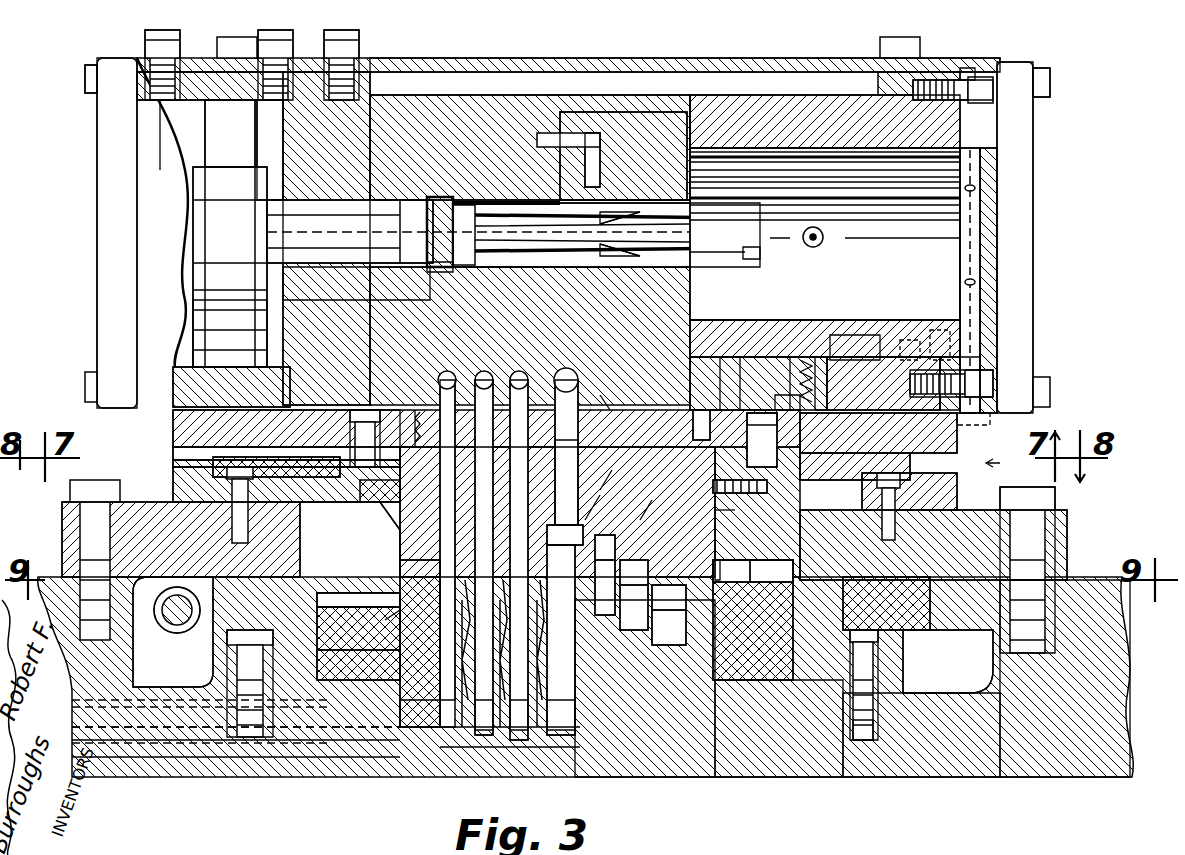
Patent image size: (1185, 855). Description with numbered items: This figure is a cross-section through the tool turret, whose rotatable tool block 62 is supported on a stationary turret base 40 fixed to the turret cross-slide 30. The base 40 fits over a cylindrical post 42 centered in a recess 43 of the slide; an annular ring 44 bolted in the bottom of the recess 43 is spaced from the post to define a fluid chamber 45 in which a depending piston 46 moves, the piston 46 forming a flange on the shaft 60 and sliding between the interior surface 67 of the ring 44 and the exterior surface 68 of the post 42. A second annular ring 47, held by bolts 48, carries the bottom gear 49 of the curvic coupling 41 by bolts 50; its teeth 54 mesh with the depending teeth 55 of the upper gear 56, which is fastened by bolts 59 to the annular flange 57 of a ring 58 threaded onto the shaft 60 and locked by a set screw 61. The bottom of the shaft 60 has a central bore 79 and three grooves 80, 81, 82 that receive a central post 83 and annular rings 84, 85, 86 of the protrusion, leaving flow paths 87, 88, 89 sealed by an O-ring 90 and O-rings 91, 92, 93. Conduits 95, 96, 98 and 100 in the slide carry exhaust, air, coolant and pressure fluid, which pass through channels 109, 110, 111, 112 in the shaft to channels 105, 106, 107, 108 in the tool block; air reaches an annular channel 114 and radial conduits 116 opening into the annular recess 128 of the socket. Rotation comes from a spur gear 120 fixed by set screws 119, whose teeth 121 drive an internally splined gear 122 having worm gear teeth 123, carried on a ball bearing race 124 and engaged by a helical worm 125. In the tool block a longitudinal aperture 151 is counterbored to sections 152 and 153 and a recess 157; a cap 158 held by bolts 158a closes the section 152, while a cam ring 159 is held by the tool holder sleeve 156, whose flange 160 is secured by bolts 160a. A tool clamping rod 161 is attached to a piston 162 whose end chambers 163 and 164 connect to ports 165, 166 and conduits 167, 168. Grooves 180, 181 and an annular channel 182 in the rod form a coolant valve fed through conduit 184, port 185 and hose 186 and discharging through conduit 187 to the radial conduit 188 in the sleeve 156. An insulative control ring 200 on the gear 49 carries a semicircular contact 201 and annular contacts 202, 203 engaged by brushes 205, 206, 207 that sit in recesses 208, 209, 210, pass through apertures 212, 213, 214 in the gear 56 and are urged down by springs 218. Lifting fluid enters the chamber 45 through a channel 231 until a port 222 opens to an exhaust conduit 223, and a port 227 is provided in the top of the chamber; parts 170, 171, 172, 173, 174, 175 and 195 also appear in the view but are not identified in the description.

The turret cross-slide 30 is at (1068, 760).
The turret base 40 is at (1105, 536).
The curvic coupling 41 is at (1000, 463).
The cylindrical post 42 is at (610, 660).
The recess 43 is at (960, 690).
The annular ring 44 is at (900, 672).
The fluid chamber 45 is at (760, 690).
The piston 46 is at (705, 690).
The second annular ring 47 is at (68, 540).
The bolts 48 is at (1058, 500).
The bottom gear 49 is at (178, 487).
The bolts 50 is at (957, 492).
The teeth 54 is at (175, 464).
The gear teeth 55 is at (178, 452).
The upper gear 56 is at (175, 425).
The annular flange 57 is at (752, 413).
The ring 58 is at (700, 395).
The bolts 59 is at (760, 390).
The shaft 60 is at (605, 410).
The set screw 61 is at (698, 412).
The tool block 62 is at (940, 385).
The interior surface 67 is at (786, 605).
The exterior surface 68 is at (731, 588).
The central vertical bore 79 is at (570, 530).
The annular groove 80 is at (606, 535).
The annular groove 81 is at (660, 575).
The annular groove 82 is at (685, 590).
The central post 83 is at (600, 490).
The annular ring 84 is at (660, 500).
The annular ring 85 is at (648, 540).
The annular ring 86 is at (410, 612).
The flow path 87 is at (602, 587).
The flow path 88 is at (634, 609).
The flow path 89 is at (669, 629).
The O-ring 90 is at (565, 547).
The O-ring 91 is at (561, 640).
The O-ring 92 is at (405, 655).
The O-ring 93 is at (400, 635).
The conduit 95 is at (420, 745).
The conduit 96 is at (485, 745).
The conduit 98 is at (525, 745).
The conduit 100 is at (565, 745).
The channel 105 is at (447, 372).
The channel 106 is at (484, 372).
The channel 107 is at (519, 370).
The channel 108 is at (568, 370).
The channel 109 is at (415, 412).
The channel 110 is at (440, 535).
The channel 111 is at (580, 440).
The channel 112 is at (585, 466).
The annular channel 114 is at (968, 68).
The radial conduits 116 is at (970, 280).
The set screws 119 is at (713, 488).
The spur gear 120 is at (730, 518).
The peripheral teeth 121 is at (345, 507).
The internally splined gear 122 is at (180, 635).
The worm gear teeth 123 is at (230, 670).
The ball bearing race 124 is at (930, 590).
The helical worm 125 is at (165, 630).
The annular recess 128 is at (985, 232).
The longitudinal aperture 151 is at (490, 203).
The counterbored section 152 is at (200, 110).
The counterbored section 153 is at (790, 118).
The tool holder sleeve 156 is at (845, 320).
The counterbored recess 157 is at (943, 78).
The cap 158 is at (110, 220).
The bolts 158a is at (88, 92).
The cam ring 159 is at (645, 118).
The flange 160 is at (985, 110).
The bolts 160a is at (1042, 68).
The tool clamping rod 161 is at (285, 220).
The piston 162 is at (210, 190).
The end chamber 163 is at (190, 320).
The end chamber 164 is at (270, 350).
The port 165 is at (170, 100).
The port 166 is at (278, 100).
The conduit 167 is at (163, 30).
The conduit 168 is at (280, 32).
The rod 170 is at (705, 265).
The rod end 171 is at (755, 262).
The cone 172 is at (640, 258).
The cone 173 is at (600, 285).
The pin 174 is at (680, 195).
The cavity block 175 is at (640, 195).
The annular groove 180 is at (345, 270).
The annular groove 181 is at (420, 268).
The annular channel 182 is at (435, 197).
The conduit 184 is at (340, 150).
The port 185 is at (355, 60).
The hose 186 is at (355, 40).
The conduit 187 is at (470, 75).
The radial conduit 188 is at (870, 140).
The ring 195 is at (442, 268).
The control ring 200 is at (955, 470).
The semicircular contact 201 is at (365, 412).
The annular contact 202 is at (280, 457).
The annular contact 203 is at (810, 480).
The brush 205 is at (805, 357).
The brush 206 is at (910, 338).
The brush 207 is at (938, 330).
The recess 208 is at (788, 395).
The recess 209 is at (850, 340).
The recess 210 is at (975, 360).
The aperture 212 is at (760, 413).
The aperture 213 is at (880, 385).
The aperture 214 is at (960, 425).
The springs 218 is at (820, 357).
The port 222 is at (850, 760).
The exhaust conduit 223 is at (855, 775).
The port 227 is at (330, 607).
The channel 231 is at (280, 752).